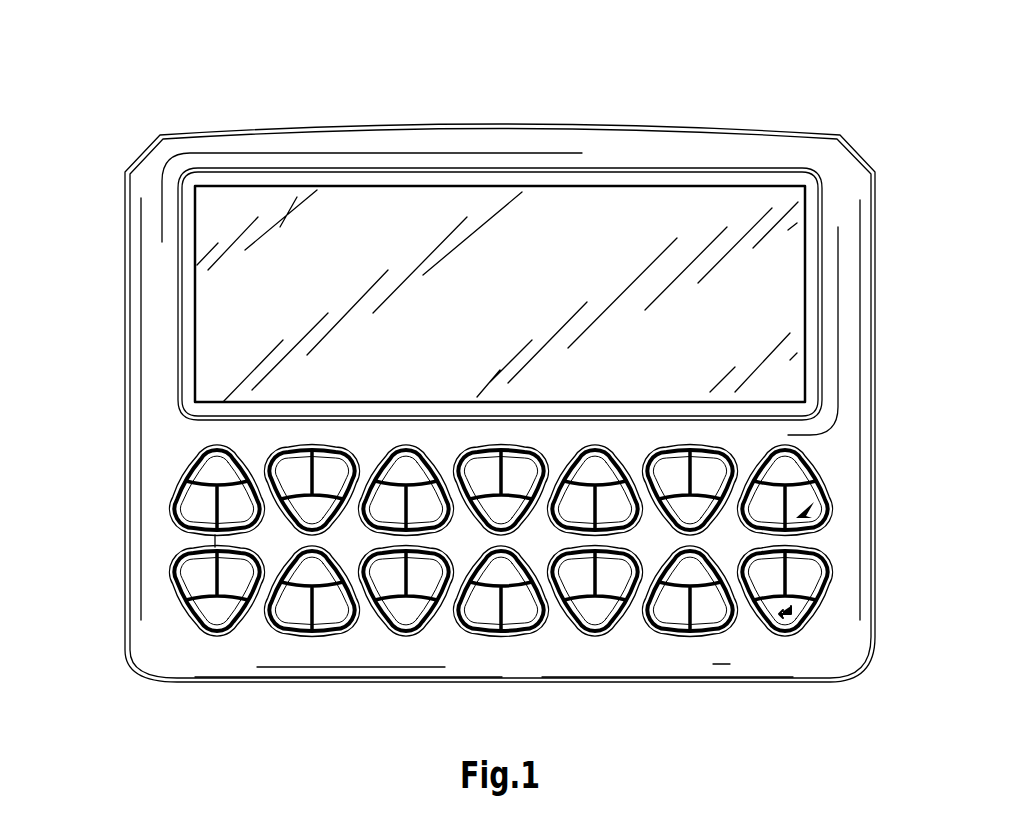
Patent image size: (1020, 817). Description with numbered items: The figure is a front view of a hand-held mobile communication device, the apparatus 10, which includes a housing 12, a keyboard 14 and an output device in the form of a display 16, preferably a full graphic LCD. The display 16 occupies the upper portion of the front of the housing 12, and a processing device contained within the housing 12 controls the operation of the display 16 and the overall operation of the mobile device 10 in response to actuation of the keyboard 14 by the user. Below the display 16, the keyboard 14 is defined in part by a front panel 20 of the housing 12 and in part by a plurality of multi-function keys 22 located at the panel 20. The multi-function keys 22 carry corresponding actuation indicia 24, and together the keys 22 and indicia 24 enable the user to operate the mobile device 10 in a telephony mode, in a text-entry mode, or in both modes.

The apparatus 10 is at (137, 100).
The housing 12 is at (124, 221).
The keyboard 14 is at (163, 437).
The display 16 is at (253, 311).
The front panel 20 is at (167, 455).
The multi-function keys 22 is at (175, 568).
The actuation indicia 24 is at (270, 628).